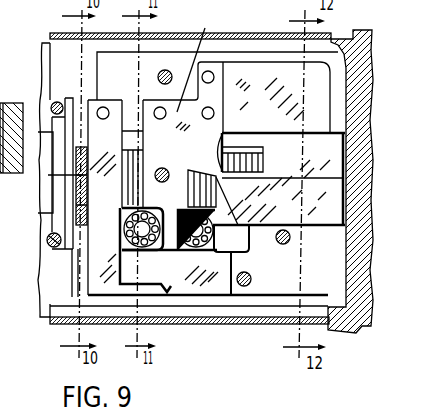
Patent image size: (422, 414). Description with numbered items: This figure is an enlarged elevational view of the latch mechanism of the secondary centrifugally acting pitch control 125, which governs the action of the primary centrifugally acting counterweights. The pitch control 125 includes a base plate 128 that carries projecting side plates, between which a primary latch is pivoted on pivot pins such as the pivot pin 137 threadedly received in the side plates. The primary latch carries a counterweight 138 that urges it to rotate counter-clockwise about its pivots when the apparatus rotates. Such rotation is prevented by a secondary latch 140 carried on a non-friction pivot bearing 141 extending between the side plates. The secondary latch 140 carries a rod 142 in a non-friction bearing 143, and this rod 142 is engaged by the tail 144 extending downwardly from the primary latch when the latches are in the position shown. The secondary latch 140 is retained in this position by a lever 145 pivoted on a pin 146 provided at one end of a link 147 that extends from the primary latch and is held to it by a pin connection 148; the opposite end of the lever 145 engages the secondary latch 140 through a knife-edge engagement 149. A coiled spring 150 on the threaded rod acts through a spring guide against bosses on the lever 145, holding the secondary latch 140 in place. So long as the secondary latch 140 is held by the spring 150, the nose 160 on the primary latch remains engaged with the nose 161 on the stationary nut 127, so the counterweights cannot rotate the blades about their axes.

The secondary centrifugally acting pitch control 125 is at (216, 33).
The nut 127 is at (303, 177).
The base plate 128 is at (363, 336).
The pivot pin 137 is at (153, 177).
The counterweight 138 is at (283, 95).
The secondary latch 140 is at (221, 295).
The non-friction pivot bearing 141 is at (161, 252).
The rod 142 is at (218, 228).
The non-friction bearing 143 is at (234, 263).
The tail 144 is at (186, 221).
The lever 145 is at (103, 240).
The pin 146 is at (105, 107).
The link 147 is at (131, 116).
The pin connection 148 is at (165, 118).
The knife-edge engagement 149 is at (136, 250).
The coiled spring 150 is at (57, 102).
The nose 160 is at (218, 145).
The nose 161 is at (251, 164).